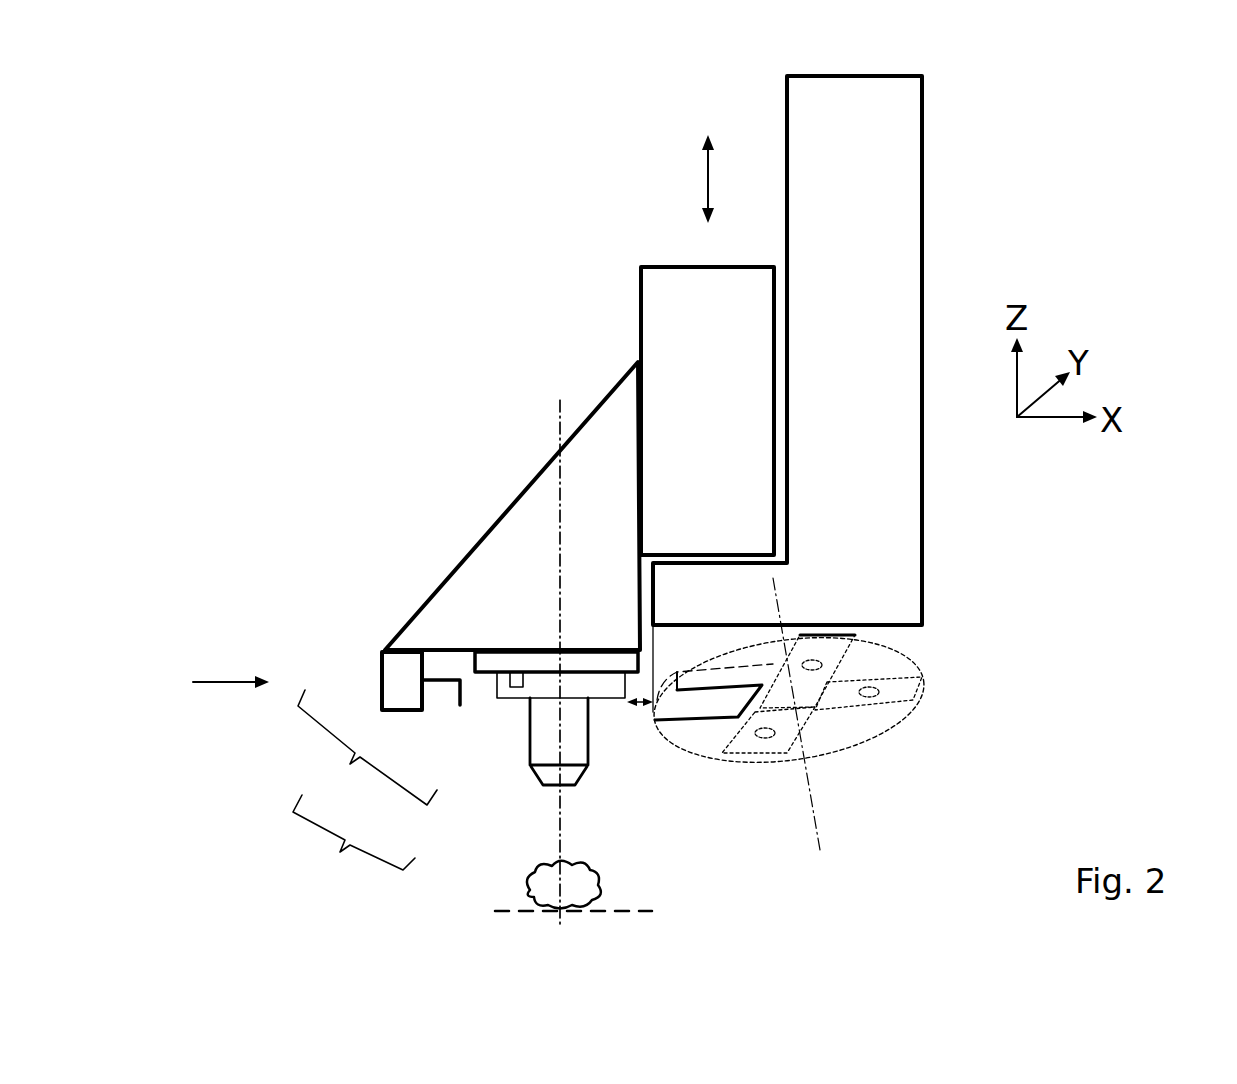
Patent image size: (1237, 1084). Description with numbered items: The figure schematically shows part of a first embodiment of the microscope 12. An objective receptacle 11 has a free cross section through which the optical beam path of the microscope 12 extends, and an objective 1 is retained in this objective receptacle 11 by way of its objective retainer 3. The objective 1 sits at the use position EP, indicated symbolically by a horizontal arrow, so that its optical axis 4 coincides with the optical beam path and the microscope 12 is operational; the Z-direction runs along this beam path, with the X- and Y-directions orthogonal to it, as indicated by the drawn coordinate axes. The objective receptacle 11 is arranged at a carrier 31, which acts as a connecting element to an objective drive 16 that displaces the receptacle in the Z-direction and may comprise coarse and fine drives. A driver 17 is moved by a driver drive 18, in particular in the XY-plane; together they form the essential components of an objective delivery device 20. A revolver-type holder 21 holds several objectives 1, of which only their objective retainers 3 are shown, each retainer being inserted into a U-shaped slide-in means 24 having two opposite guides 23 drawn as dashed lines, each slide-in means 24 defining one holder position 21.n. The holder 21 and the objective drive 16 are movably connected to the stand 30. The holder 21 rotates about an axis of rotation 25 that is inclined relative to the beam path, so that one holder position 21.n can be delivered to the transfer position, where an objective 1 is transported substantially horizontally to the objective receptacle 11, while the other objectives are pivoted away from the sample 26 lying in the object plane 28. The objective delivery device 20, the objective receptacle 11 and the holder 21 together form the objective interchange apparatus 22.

The objective 1 is at (575, 750).
The objective retainer 3 is at (530, 692).
The optical axis 4 is at (560, 431).
The objective receptacle 11 is at (485, 673).
The microscope 12 is at (497, 228).
The objective drive 16 is at (731, 355).
The driver 17 is at (445, 683).
The driver drive 18 is at (393, 692).
The objective delivery device 20 is at (367, 751).
The holder 21 is at (932, 638).
The holder position 21.n is at (827, 627).
The objective interchange apparatus 22 is at (354, 849).
The guide 23 is at (887, 684).
The slide-in means 24 is at (678, 710).
The axis of rotation 25 is at (820, 850).
The sample 26 is at (578, 882).
The object plane 28 is at (502, 907).
The stand 30 is at (890, 192).
The carrier 31 is at (521, 625).
The use position EP is at (223, 682).